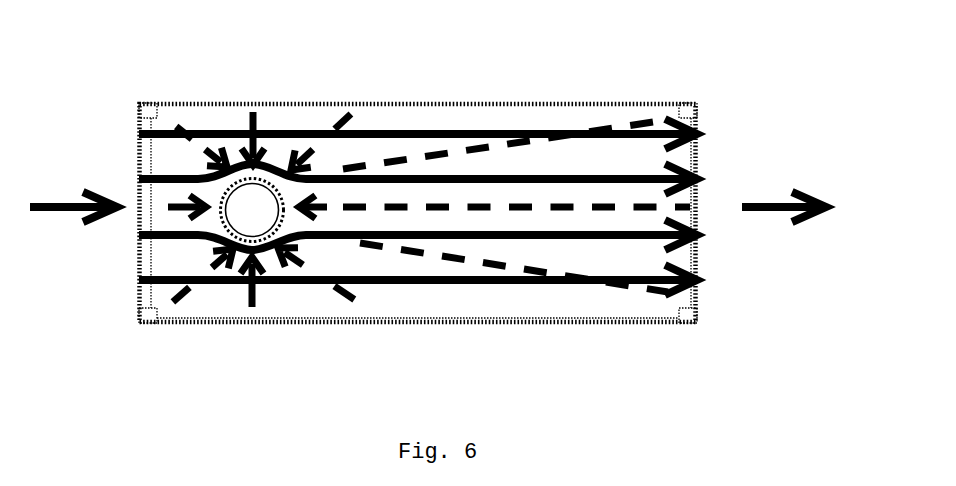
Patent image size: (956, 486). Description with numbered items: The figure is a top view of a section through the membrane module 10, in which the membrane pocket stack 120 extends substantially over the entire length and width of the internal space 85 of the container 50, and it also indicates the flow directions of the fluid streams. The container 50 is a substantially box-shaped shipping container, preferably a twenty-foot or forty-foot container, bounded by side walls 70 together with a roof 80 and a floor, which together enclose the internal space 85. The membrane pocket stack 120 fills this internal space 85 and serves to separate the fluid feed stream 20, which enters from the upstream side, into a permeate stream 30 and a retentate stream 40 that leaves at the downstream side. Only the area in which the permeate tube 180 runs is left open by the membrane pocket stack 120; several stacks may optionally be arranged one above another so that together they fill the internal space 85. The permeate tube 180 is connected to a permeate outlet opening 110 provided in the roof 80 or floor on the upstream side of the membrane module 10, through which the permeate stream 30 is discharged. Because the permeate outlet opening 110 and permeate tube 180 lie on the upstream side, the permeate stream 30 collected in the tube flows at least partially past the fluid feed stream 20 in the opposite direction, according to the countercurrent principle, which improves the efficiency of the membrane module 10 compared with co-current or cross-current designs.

The membrane module 10 is at (566, 79).
The fluid feed stream 20 is at (99, 203).
The permeate stream 30 is at (307, 178).
The retentate stream 40 is at (811, 203).
The container 50 is at (444, 120).
The side walls 70 is at (348, 102).
The roof 80 is at (488, 122).
The internal space 85 is at (597, 310).
The permeate outlet opening 110 is at (253, 206).
The membrane pocket stack 120 is at (506, 308).
The permeate tube 180 is at (263, 240).